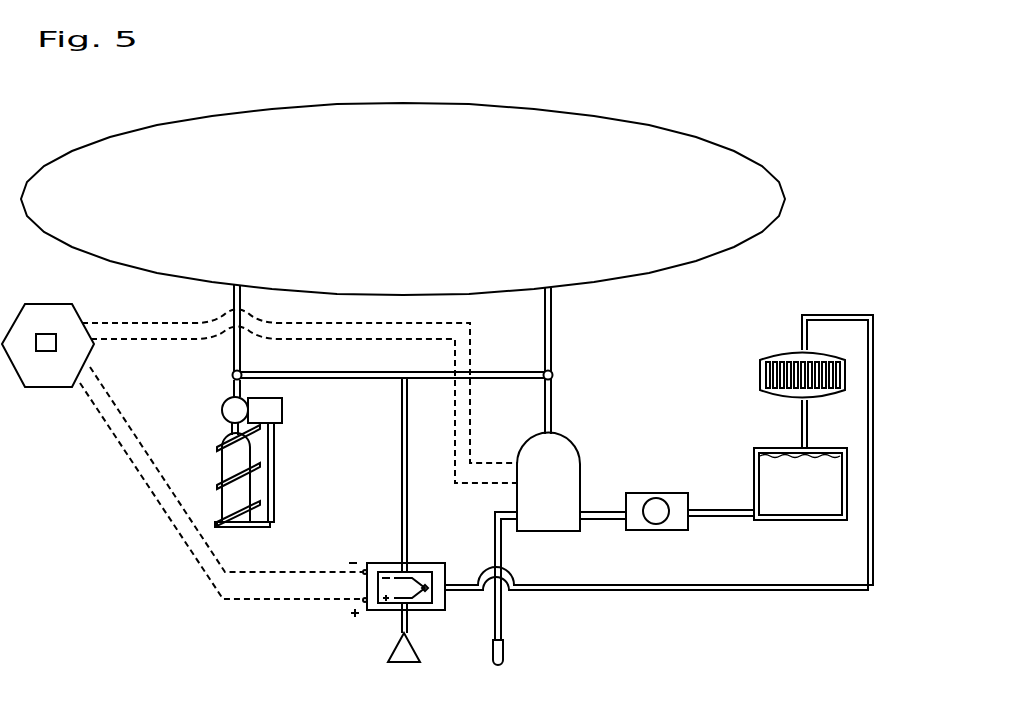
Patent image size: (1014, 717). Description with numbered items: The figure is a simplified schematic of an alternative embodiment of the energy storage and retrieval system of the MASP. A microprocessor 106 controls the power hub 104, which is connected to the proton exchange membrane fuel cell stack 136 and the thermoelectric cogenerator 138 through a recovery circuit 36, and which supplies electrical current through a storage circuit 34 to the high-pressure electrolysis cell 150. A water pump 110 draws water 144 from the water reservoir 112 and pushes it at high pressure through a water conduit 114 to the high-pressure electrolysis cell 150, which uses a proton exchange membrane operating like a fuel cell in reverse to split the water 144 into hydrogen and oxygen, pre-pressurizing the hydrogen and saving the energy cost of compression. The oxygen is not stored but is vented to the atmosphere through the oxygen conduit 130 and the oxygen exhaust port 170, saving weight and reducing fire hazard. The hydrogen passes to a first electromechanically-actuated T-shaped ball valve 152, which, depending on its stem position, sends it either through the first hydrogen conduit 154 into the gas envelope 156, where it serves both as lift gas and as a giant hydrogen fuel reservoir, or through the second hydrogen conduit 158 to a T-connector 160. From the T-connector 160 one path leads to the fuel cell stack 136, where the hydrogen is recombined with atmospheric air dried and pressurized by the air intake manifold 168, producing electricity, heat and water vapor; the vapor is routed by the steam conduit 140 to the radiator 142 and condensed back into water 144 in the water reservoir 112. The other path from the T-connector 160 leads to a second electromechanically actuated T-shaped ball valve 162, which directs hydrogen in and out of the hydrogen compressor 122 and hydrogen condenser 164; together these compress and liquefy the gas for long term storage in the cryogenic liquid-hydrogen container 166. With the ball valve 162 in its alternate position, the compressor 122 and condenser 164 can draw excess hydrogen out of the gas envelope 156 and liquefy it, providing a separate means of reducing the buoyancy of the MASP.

The storage circuit 34 is at (137, 323).
The recovery circuit 36 is at (145, 483).
The power hub 104 is at (44, 316).
The microprocessor 106 is at (45, 352).
The water pump 110 is at (660, 493).
The water reservoir 112 is at (760, 448).
The water conduit 114 is at (725, 517).
The hydrogen compressor 122 is at (224, 404).
The oxygen conduit 130 is at (503, 553).
The proton exchange membrane fuel cell stack 136 is at (375, 563).
The thermoelectric cogenerator 138 is at (420, 576).
The steam conduit 140 is at (623, 590).
The radiator 142 is at (760, 372).
The water 144 is at (821, 504).
The high-pressure electrolysis cell 150 is at (571, 504).
The first electromechanically-actuated T-shaped ball valve 152 is at (555, 371).
The first hydrogen conduit 154 is at (552, 323).
The gas envelope 156 is at (428, 215).
The second hydrogen conduit 158 is at (497, 371).
The T-connector 160 is at (402, 378).
The second electromechanically actuated T-shaped ball valve 162 is at (232, 374).
The hydrogen condenser 164 is at (275, 471).
The cryogenic liquid-hydrogen container 166 is at (238, 512).
The air intake manifold 168 is at (403, 653).
The oxygen exhaust port 170 is at (505, 653).